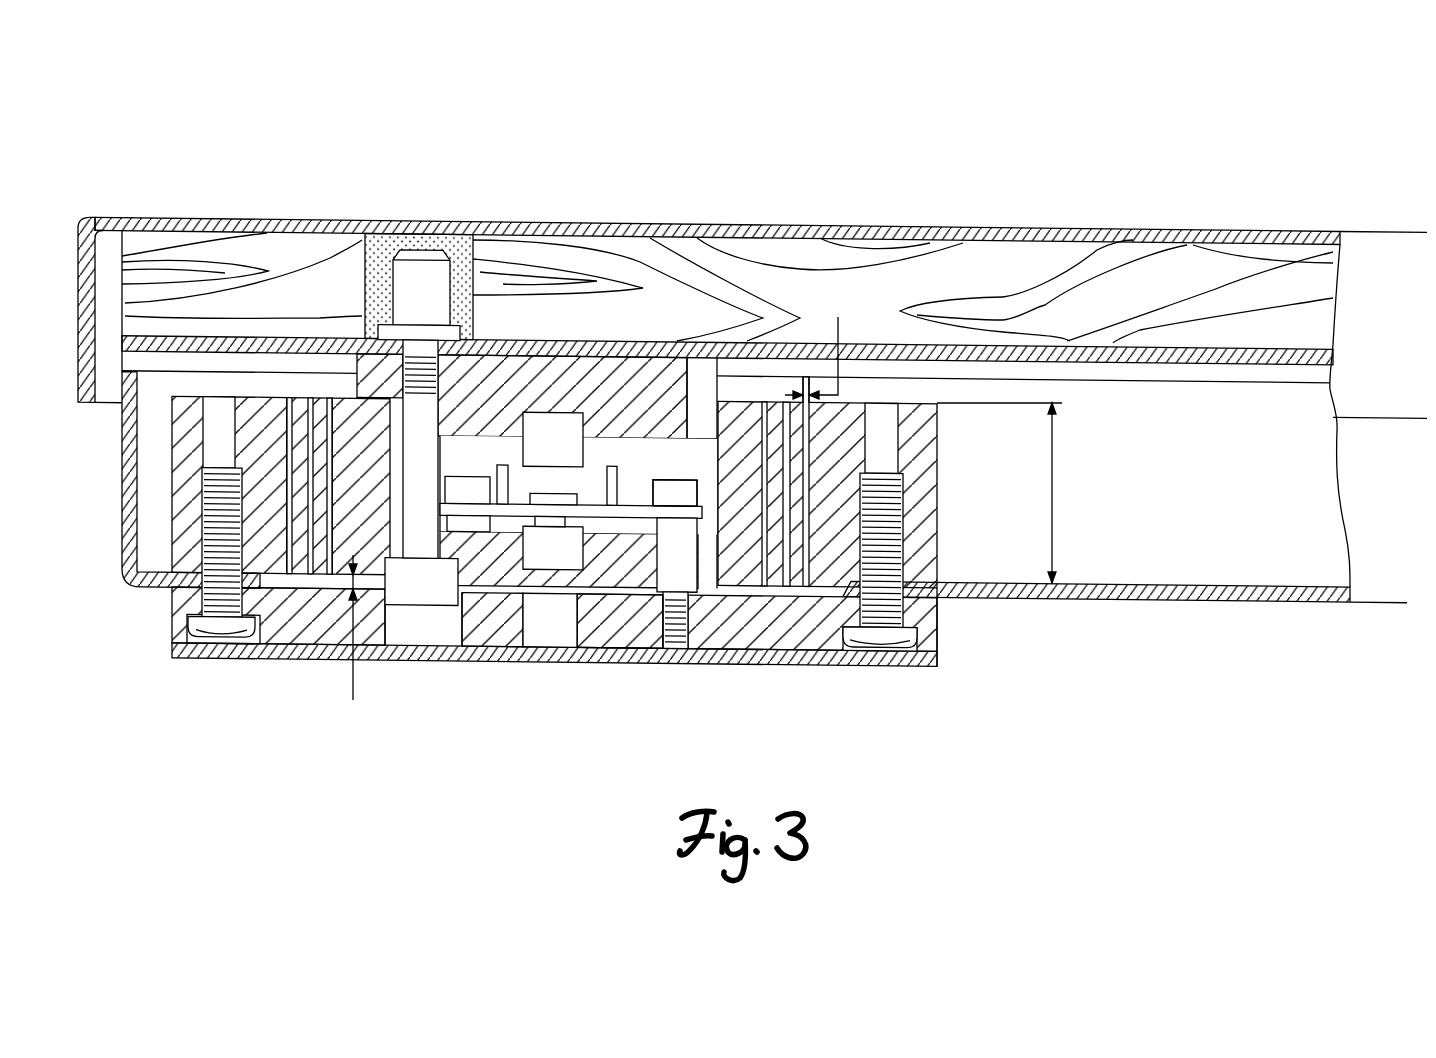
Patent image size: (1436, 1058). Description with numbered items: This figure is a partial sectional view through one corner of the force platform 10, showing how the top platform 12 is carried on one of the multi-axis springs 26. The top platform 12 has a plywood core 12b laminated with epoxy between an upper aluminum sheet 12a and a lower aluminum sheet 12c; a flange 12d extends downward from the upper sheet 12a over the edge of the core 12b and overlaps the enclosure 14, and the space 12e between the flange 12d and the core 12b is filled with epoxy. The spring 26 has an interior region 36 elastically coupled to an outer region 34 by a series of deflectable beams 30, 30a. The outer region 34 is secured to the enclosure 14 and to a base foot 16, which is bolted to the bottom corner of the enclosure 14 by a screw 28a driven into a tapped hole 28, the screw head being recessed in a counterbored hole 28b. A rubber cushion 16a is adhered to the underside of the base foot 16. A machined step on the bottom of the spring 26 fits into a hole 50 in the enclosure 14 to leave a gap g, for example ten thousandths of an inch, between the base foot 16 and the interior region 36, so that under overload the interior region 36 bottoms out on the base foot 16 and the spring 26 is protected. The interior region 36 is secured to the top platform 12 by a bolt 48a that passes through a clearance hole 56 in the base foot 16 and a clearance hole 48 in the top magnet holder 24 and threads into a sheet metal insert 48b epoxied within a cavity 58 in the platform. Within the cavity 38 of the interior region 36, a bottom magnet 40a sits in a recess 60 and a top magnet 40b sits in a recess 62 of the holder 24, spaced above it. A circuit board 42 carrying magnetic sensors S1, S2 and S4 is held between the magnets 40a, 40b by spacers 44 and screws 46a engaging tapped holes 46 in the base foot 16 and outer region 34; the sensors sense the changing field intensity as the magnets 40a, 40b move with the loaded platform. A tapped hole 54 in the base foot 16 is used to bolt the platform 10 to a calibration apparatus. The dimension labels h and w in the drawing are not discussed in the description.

The force platform 10 is at (958, 148).
The top platform 12 is at (1387, 230).
The aluminum sheet 12a is at (1056, 230).
The plywood core 12b is at (1162, 270).
The aluminum sheet 12c is at (1252, 366).
The flange 12d is at (80, 358).
The space 12e is at (108, 257).
The enclosure 14 is at (1373, 563).
The base foot 16 is at (170, 621).
The cushion 16a is at (843, 662).
The top magnet holder 24 is at (608, 398).
The multi-axis spring 26 is at (940, 548).
The tapped hole 28 is at (888, 495).
The screw 28a is at (873, 648).
The counterbored hole 28b is at (905, 657).
The left shim plates 30 is at (329, 400).
The deflectable beams 30a is at (775, 640).
The outer region 34 is at (181, 462).
The interior region 36 is at (343, 483).
The cavity 38 is at (452, 443).
The bottom magnet 40a is at (532, 560).
The top magnet 40b is at (532, 453).
The circuit board 42 is at (606, 528).
The spacer 44 is at (683, 560).
The tapped hole 46 is at (672, 662).
The screw 46a is at (683, 648).
The clearance hole 48 is at (375, 325).
The bolt 48a is at (437, 597).
The insert 48b is at (418, 268).
The hole 50 is at (299, 598).
The tapped hole 54 is at (548, 632).
The clearance hole 56 is at (393, 627).
The cavity 58 is at (458, 250).
The recess 60 is at (523, 552).
The recess 62 is at (523, 422).
The magnetic sensor S1 is at (572, 492).
The magnetic sensor S2 is at (497, 470).
The magnetic sensor S4 is at (625, 485).
The gap width w is at (817, 346).
The block height h is at (999, 493).
The gap g is at (350, 643).